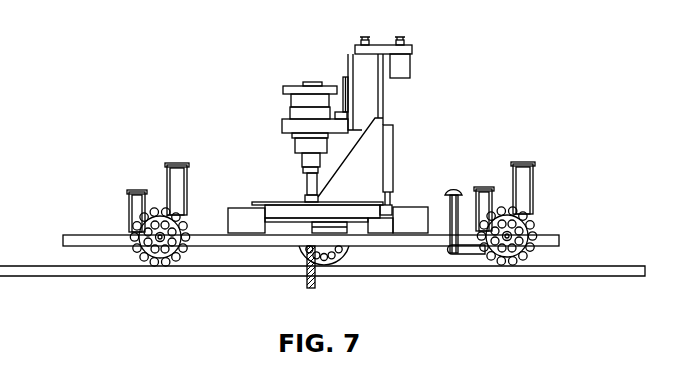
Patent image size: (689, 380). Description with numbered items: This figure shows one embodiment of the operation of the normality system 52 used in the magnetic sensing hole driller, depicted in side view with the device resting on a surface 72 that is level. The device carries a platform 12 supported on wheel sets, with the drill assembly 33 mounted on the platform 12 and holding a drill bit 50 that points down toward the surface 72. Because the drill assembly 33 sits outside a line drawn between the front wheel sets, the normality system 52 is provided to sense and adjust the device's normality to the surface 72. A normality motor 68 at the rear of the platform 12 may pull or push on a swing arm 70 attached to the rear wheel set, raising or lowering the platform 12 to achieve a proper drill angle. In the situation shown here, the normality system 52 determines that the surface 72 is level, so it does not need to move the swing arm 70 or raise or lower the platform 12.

The platform 12 is at (88, 235).
The drill assembly 33 is at (383, 105).
The drill bit 50 is at (317, 285).
The normality system 52 is at (522, 133).
The normality motor 68 is at (453, 188).
The swing arm 70 is at (463, 256).
The surface 72 is at (63, 277).